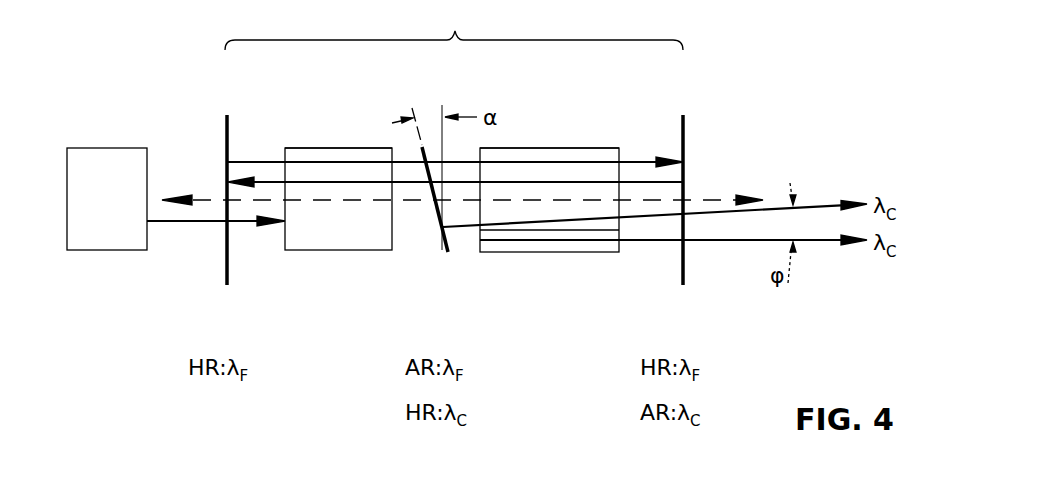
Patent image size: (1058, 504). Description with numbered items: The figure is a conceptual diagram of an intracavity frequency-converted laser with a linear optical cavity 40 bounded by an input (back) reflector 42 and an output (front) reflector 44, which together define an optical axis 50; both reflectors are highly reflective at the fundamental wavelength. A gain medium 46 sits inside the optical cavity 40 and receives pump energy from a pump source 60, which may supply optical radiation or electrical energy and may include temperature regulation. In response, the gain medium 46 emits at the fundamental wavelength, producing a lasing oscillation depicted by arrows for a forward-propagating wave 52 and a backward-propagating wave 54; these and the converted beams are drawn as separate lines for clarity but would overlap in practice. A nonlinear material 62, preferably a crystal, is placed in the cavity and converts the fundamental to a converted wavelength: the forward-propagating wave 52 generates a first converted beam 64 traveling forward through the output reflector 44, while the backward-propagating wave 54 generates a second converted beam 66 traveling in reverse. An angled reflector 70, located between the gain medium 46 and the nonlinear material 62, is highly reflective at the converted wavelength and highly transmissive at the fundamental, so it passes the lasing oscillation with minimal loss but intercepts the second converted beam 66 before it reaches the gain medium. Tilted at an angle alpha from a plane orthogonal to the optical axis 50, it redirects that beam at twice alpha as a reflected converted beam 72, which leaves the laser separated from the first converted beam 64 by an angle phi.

The optical cavity 40 is at (454, 27).
The input reflector 42 is at (223, 270).
The output reflector 44 is at (687, 270).
The gain medium 46 is at (317, 148).
The optical axis 50 is at (207, 200).
The forward-propagating wave 52 is at (364, 162).
The backward-propagating wave 54 is at (535, 167).
The pump source 60 is at (107, 148).
The nonlinear material 62 is at (583, 148).
The first converted beam 64 is at (645, 240).
The second converted beam 66 is at (558, 230).
The angled reflector 70 is at (437, 242).
The reflected converted beam 72 is at (823, 205).